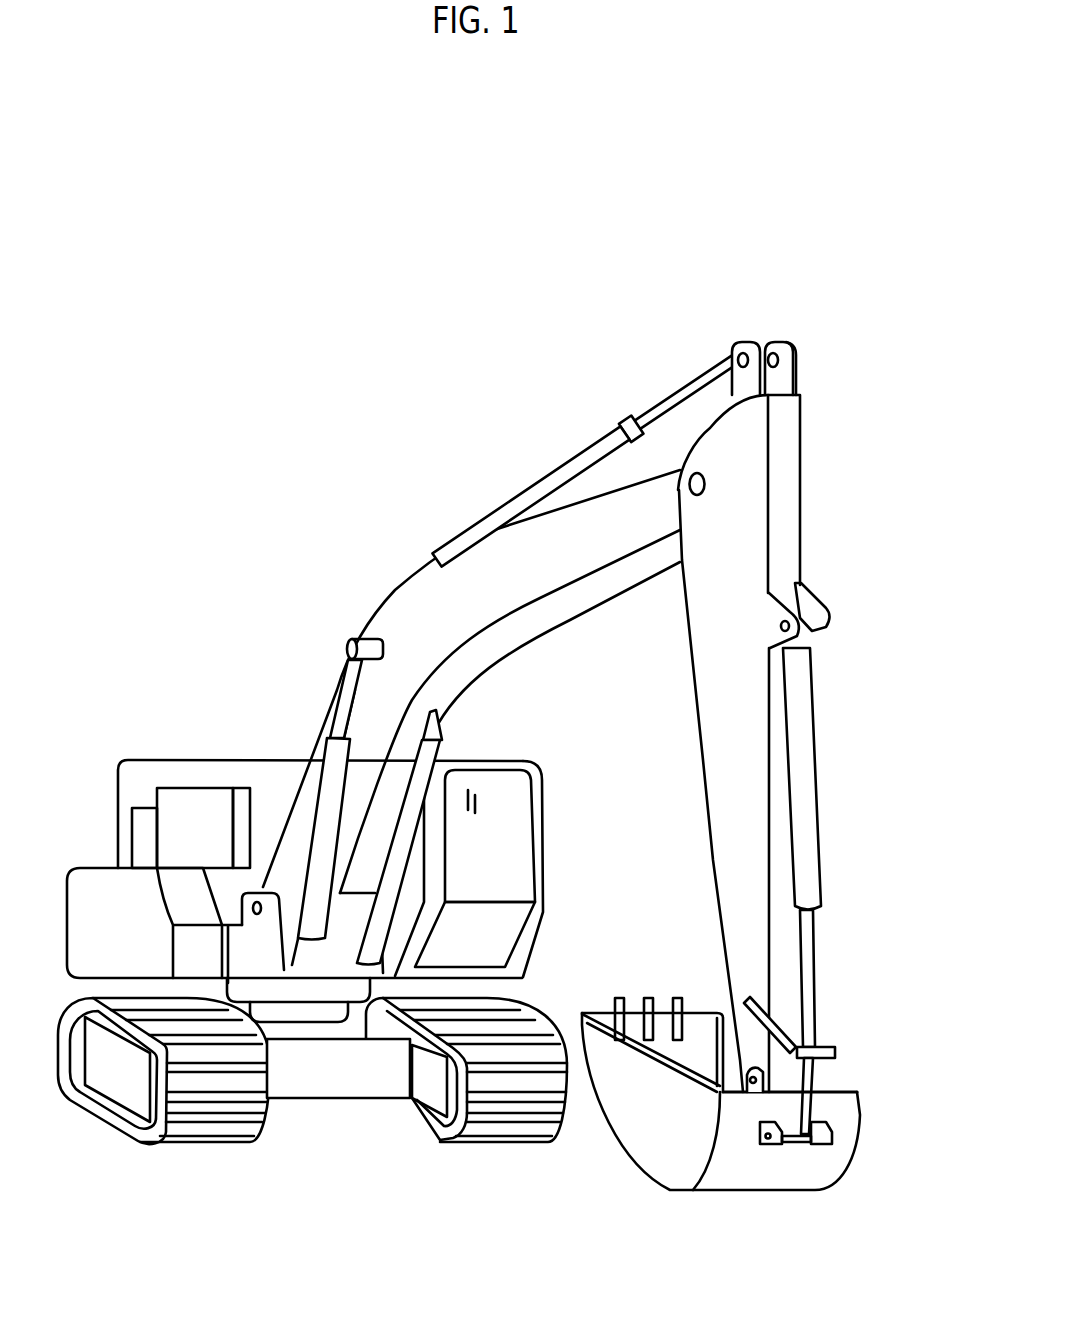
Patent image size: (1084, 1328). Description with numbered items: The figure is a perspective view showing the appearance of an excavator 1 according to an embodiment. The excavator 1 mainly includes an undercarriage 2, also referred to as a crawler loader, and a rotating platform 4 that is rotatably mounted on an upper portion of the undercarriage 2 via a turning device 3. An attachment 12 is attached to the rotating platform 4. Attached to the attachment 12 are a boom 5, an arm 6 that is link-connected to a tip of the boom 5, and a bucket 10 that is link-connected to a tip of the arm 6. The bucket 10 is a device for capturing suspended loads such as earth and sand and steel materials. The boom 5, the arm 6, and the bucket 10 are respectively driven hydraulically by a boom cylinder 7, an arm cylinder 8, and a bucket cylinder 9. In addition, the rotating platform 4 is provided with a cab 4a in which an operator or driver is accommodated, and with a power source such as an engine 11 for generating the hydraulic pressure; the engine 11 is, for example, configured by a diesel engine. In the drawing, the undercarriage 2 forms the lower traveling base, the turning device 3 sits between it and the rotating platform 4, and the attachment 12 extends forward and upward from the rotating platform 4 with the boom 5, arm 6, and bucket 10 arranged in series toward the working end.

The excavator 1 is at (913, 308).
The undercarriage 2 is at (306, 1097).
The turning device 3 is at (311, 988).
The rotating platform 4 is at (93, 863).
The cab 4a is at (513, 855).
The boom 5 is at (458, 583).
The arm 6 is at (700, 848).
The boom cylinder 7 is at (318, 797).
The arm cylinder 8 is at (540, 495).
The bucket cylinder 9 is at (806, 780).
The bucket 10 is at (647, 1158).
The engine 11 is at (203, 788).
The attachment 12 is at (358, 581).